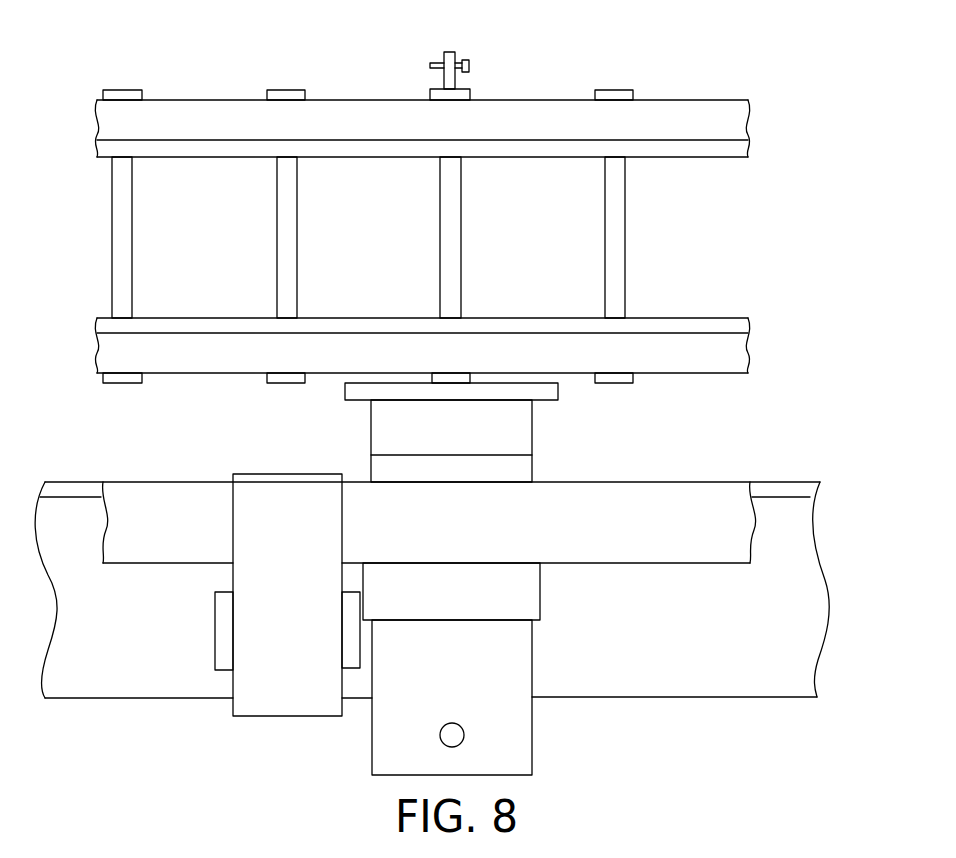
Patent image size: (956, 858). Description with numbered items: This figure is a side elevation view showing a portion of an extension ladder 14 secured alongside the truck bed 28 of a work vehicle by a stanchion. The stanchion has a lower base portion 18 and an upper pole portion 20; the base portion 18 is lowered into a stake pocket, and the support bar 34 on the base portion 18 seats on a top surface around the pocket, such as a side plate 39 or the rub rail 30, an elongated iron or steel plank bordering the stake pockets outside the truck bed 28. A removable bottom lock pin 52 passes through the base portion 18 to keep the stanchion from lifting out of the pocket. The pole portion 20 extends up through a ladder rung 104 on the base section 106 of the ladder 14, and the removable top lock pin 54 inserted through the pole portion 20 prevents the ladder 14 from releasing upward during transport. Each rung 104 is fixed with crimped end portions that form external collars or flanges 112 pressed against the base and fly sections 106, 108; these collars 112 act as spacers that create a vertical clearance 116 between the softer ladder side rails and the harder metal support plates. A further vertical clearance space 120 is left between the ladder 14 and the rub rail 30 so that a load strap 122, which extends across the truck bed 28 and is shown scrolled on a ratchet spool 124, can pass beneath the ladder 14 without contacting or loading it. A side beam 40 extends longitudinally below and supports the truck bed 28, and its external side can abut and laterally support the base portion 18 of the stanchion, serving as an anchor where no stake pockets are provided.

The ladder 14 is at (522, 83).
The base portion 18 is at (385, 730).
The pole portion 20 is at (444, 80).
The truck bed 28 is at (77, 488).
The rub rail 30 is at (712, 490).
The support bar 34 is at (517, 470).
The side plate 39 is at (530, 590).
The side beam 40 is at (790, 600).
The bottom lock pin 52 is at (456, 735).
The top lock pin 54 is at (468, 62).
The ladder rung 104 is at (122, 240).
The base section 106 is at (746, 118).
The fly section 108 is at (745, 150).
The collars or flanges 112 is at (123, 95).
The vertical clearance 116 is at (545, 376).
The vertical clearance space 120 is at (192, 377).
The load strap 122 is at (285, 698).
The ratchet spool 124 is at (218, 620).